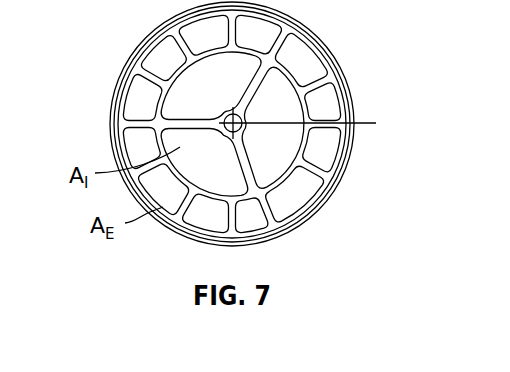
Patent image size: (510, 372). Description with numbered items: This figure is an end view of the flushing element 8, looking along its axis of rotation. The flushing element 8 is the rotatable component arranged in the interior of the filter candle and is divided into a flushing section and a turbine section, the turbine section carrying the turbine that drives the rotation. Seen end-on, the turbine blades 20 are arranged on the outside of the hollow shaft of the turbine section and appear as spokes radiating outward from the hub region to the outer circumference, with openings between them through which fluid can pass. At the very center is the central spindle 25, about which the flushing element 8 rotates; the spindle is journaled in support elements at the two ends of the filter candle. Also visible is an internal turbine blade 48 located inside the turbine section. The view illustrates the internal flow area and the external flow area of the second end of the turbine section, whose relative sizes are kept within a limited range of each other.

The flushing element 8 is at (109, 36).
The turbine blade 20 is at (330, 70).
The central spindle 25 is at (298, 110).
The internal turbine blade 48 is at (312, 123).